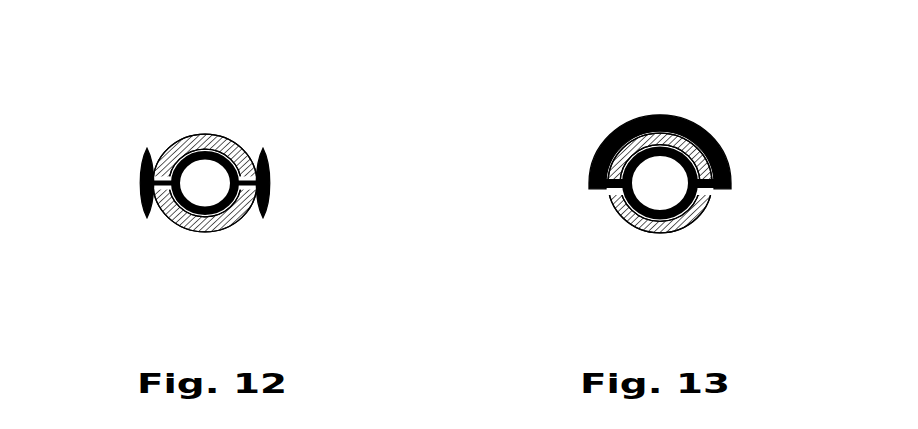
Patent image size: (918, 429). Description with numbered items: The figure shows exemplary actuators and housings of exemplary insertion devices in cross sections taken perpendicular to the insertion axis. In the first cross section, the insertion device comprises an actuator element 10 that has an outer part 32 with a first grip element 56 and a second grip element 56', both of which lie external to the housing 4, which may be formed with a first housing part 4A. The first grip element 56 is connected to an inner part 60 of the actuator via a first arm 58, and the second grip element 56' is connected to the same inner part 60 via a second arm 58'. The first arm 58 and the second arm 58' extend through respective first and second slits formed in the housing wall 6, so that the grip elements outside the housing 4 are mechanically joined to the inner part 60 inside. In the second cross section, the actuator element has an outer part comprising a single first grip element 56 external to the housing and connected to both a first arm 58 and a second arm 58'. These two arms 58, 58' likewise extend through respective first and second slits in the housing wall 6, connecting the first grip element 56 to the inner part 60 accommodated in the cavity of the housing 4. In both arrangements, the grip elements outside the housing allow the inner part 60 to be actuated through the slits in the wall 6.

In FIG. 12, the housing 4 is at (205, 136).
In FIG. 13, the housing 4 is at (680, 225).
In FIG. 12, the first housing part 4A is at (213, 136).
In FIG. 13, the first housing part 4A is at (690, 220).
In FIG. 12, the housing wall 6 is at (210, 233).
In FIG. 13, the housing wall 6 is at (652, 228).
In FIG. 12, the actuator element 10 is at (231, 182).
In FIG. 13, the actuator element 10 is at (612, 209).
In FIG. 12, the outer part 32 is at (143, 158).
In FIG. 13, the outer part 32 is at (594, 163).
In FIG. 12, the first grip element 56 is at (100, 151).
In FIG. 13, the first grip element 56 is at (594, 145).
In FIG. 12, the second grip element 56' is at (335, 198).
In FIG. 12, the first arm 58 is at (164, 139).
In FIG. 13, the first arm 58 is at (607, 228).
In FIG. 12, the second arm 58' is at (251, 139).
In FIG. 13, the second arm 58' is at (726, 214).
In FIG. 12, the inner part 60 is at (248, 220).
In FIG. 13, the inner part 60 is at (693, 214).